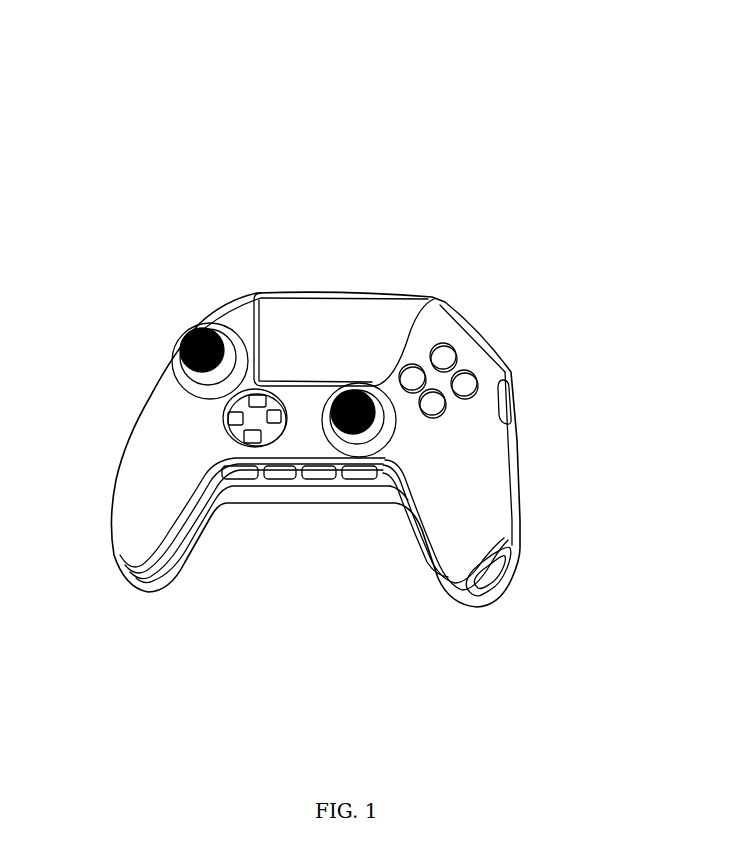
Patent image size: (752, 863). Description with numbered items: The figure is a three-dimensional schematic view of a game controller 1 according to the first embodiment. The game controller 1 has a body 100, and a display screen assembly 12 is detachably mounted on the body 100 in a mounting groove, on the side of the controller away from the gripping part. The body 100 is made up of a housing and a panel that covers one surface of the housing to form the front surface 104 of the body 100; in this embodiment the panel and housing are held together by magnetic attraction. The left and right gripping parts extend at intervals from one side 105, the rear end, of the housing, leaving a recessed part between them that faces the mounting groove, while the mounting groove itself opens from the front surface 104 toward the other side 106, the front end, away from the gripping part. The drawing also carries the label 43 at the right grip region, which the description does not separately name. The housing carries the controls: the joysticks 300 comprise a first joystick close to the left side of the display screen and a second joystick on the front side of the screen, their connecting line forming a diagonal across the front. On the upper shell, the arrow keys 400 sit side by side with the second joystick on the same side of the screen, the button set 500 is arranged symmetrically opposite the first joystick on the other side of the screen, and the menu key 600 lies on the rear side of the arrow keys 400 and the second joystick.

The game controller 1 is at (268, 140).
The display screen assembly 12 is at (331, 310).
The right grip recess 43 is at (485, 527).
The body 100 is at (527, 402).
The front surface 104 is at (472, 502).
The one side (rear end) 105 is at (203, 480).
The other side (front end) 106 is at (430, 303).
The joysticks 300 is at (190, 334).
The arrow keys 400 is at (240, 412).
The button set 500 is at (467, 363).
The menu key 600 is at (300, 478).